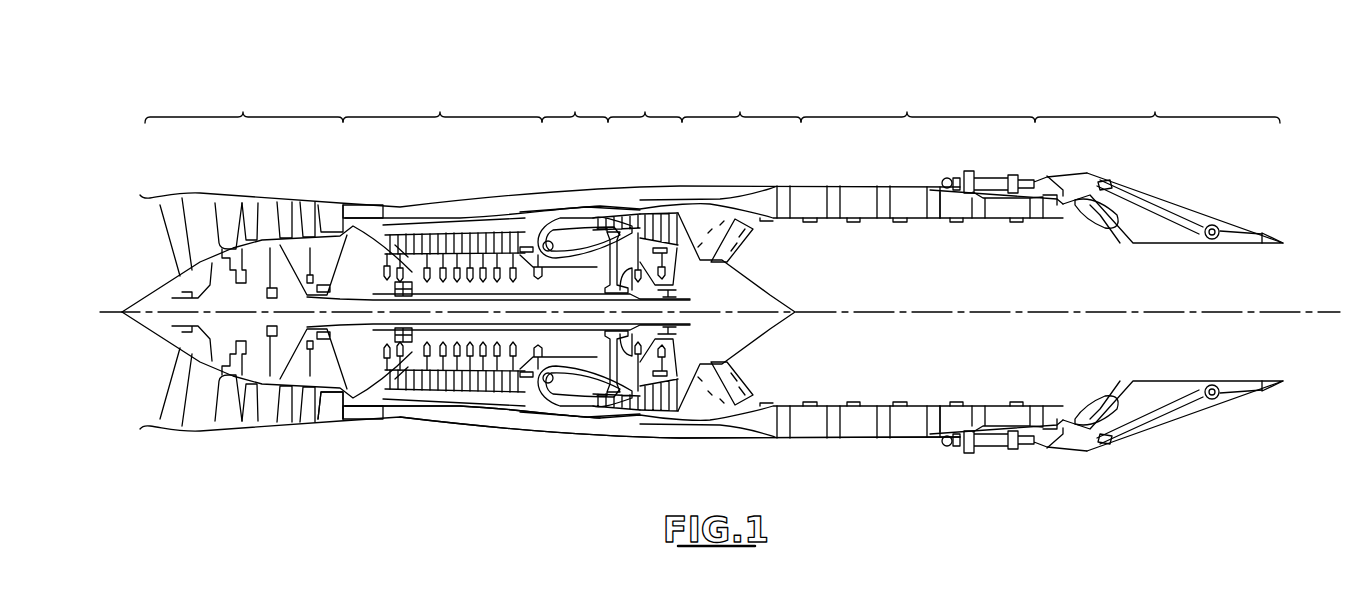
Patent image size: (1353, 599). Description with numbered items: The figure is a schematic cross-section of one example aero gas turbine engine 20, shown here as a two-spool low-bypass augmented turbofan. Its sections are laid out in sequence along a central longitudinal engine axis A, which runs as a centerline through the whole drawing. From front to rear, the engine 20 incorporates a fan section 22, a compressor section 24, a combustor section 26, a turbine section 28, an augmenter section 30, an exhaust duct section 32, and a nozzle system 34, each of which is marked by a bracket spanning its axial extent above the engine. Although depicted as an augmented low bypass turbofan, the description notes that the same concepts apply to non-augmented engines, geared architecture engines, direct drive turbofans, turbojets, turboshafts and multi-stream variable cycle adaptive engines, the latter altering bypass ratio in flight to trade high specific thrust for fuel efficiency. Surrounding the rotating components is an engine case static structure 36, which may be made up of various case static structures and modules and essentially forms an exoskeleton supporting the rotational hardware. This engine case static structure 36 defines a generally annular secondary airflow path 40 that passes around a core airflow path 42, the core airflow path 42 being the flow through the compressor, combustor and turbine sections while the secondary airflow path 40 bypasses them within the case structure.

The gas turbine engine 20 is at (968, 36).
The fan section 22 is at (244, 104).
The compressor section 24 is at (442, 104).
The combustor section 26 is at (575, 104).
The turbine section 28 is at (645, 104).
The augmenter section 30 is at (741, 104).
The exhaust duct section 32 is at (918, 104).
The nozzle system 34 is at (1157, 104).
The engine case static structure 36 is at (635, 438).
The secondary airflow path 40 is at (413, 413).
The core airflow path 42 is at (347, 389).
The central longitudinal engine axis A is at (1057, 313).